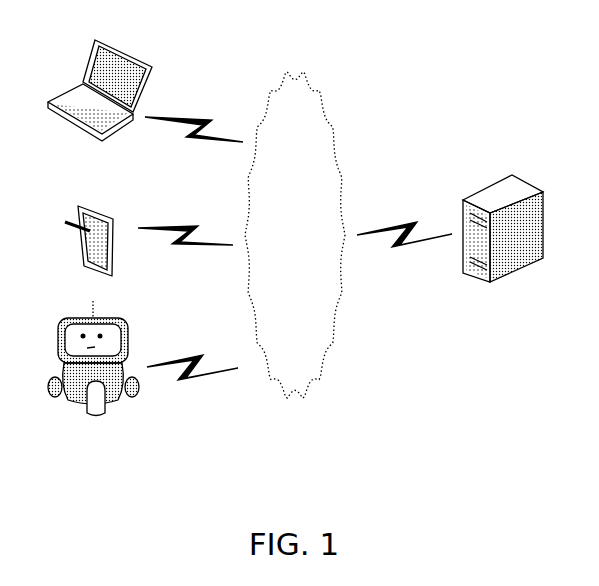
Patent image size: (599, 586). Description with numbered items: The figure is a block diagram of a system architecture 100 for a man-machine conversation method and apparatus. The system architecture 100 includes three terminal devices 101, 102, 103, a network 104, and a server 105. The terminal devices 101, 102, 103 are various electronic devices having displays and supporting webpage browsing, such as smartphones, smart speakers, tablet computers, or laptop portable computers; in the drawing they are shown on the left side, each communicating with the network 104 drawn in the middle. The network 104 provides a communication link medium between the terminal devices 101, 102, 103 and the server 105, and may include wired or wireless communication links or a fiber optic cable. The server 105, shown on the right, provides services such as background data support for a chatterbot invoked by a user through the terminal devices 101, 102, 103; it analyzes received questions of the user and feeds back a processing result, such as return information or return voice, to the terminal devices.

The system architecture 100 is at (515, 40).
The terminal device 101 is at (93, 377).
The terminal device 102 is at (89, 254).
The terminal device 103 is at (100, 102).
The network 104 is at (295, 235).
The server 105 is at (503, 243).